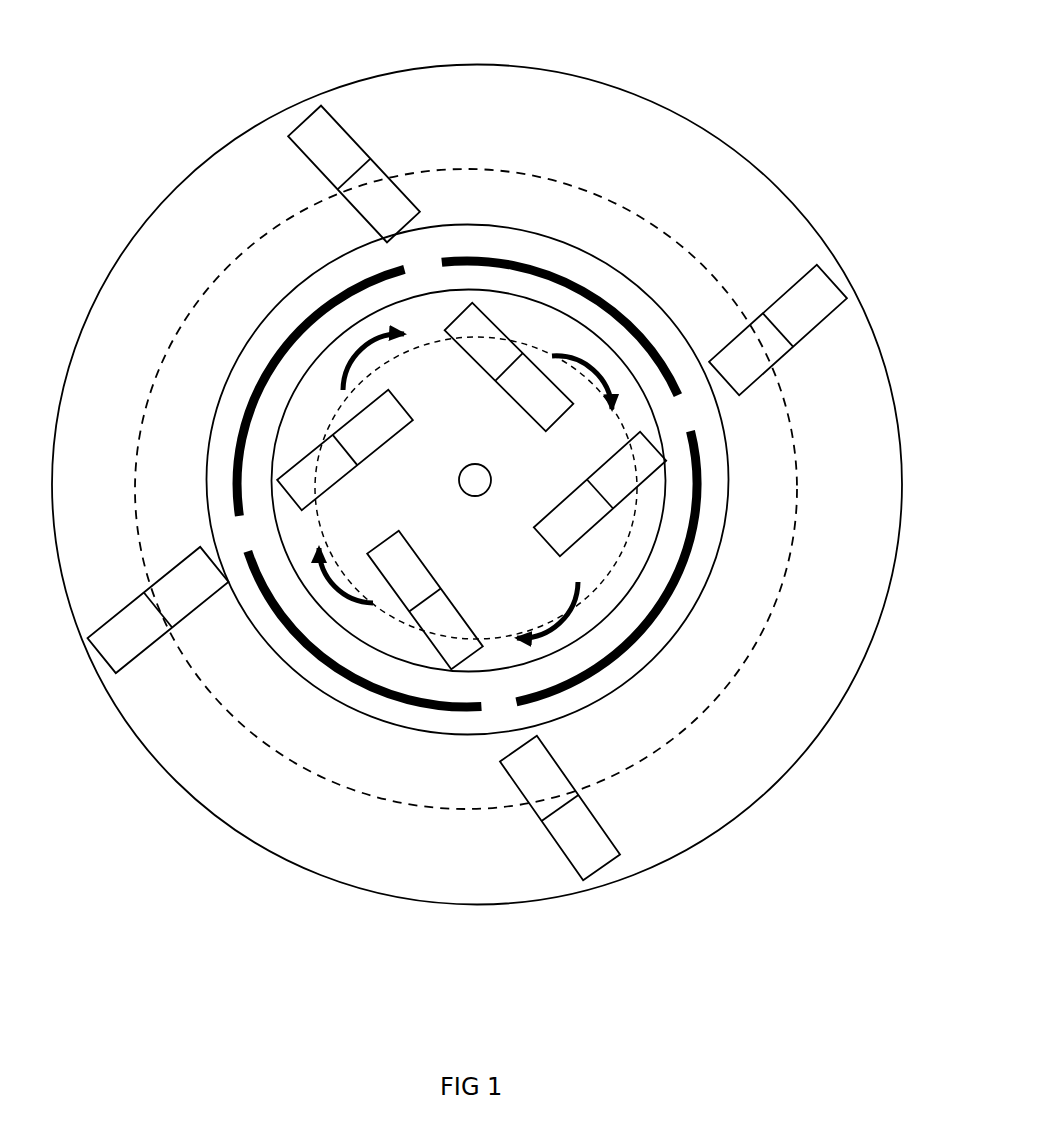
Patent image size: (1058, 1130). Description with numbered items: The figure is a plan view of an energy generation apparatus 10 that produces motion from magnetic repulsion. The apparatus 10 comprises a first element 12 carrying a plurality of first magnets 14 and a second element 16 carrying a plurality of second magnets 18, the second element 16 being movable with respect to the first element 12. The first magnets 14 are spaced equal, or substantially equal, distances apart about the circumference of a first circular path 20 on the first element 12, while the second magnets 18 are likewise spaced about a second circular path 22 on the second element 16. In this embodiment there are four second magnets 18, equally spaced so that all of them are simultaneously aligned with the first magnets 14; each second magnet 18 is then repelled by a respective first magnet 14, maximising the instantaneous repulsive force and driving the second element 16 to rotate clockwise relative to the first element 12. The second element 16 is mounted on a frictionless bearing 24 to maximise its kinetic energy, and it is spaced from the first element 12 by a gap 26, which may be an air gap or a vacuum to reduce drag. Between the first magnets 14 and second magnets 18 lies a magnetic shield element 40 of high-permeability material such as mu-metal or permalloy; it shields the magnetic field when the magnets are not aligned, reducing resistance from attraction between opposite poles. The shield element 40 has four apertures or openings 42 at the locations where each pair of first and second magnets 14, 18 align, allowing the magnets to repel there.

The energy generation apparatus 10 is at (699, 104).
The first element 12 is at (659, 186).
The first magnet 14 is at (374, 164).
The second element 16 is at (501, 554).
The second magnet 18 is at (500, 321).
The first circular path 20 is at (798, 438).
The second circular path 22 is at (615, 574).
The frictionless bearing 24 is at (470, 471).
The gap 26 is at (348, 313).
The magnetic shield element 40 is at (650, 644).
The aperture or opening 42 is at (242, 536).